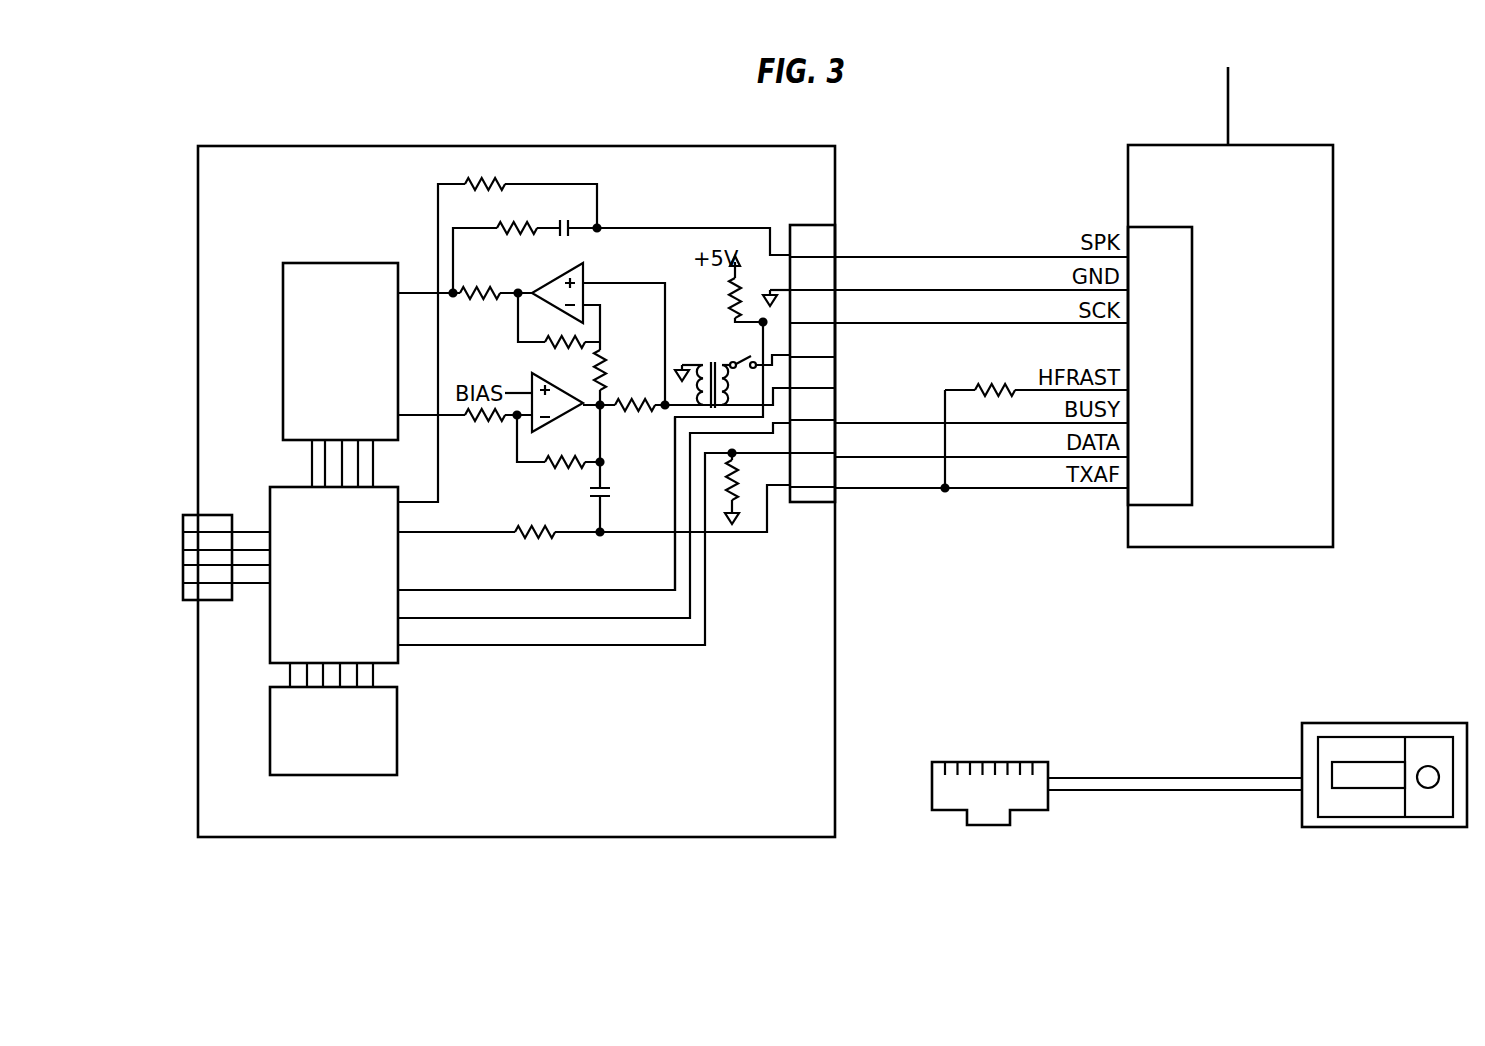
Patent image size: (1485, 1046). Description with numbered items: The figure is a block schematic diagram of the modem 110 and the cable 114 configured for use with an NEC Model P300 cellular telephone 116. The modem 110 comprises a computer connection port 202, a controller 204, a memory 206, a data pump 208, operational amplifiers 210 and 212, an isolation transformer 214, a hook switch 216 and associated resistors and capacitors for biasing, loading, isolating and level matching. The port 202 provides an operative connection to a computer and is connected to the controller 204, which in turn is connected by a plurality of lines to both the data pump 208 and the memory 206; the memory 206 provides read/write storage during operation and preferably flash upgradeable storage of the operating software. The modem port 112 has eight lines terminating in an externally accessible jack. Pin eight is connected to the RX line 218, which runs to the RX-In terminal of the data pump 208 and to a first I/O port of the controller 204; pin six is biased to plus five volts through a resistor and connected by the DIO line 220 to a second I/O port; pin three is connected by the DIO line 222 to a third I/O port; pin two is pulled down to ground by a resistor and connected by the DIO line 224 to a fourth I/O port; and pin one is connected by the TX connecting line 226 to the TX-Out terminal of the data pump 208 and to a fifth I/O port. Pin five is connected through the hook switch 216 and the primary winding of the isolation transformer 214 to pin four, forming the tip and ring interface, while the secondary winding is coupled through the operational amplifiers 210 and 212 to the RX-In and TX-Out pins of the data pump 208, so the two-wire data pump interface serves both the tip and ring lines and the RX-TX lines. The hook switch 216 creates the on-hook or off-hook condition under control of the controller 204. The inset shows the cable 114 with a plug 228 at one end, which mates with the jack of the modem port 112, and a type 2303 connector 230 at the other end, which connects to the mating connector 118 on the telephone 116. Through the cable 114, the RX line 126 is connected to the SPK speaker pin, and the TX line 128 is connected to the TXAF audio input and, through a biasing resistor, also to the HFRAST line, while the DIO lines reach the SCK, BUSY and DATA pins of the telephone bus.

The modem 110 is at (705, 146).
The modem port 112 is at (817, 505).
The cable 114 is at (1038, 676).
The cellular telephone 116 is at (1265, 145).
The mating connector 118 is at (1157, 240).
The RX line 126 is at (928, 257).
The TX line 128 is at (895, 490).
The computer connection port 202 is at (183, 550).
The controller 204 is at (270, 625).
The memory 206 is at (270, 722).
The data pump 208 is at (283, 380).
The operational amplifier 210 is at (538, 287).
The operational amplifier 212 is at (538, 375).
The isolation transformer 214 is at (705, 368).
The hook switch 216 is at (735, 363).
The RX line 218 is at (660, 228).
The DIO line 220 is at (450, 590).
The DIO line 222 is at (690, 568).
The DIO line 224 is at (615, 645).
The TX connecting line 226 is at (443, 532).
The RJ-45 plug 228 is at (985, 828).
The type 2303 connector 230 is at (1345, 828).
The type 2303 connector 2303 is at (1130, 520).